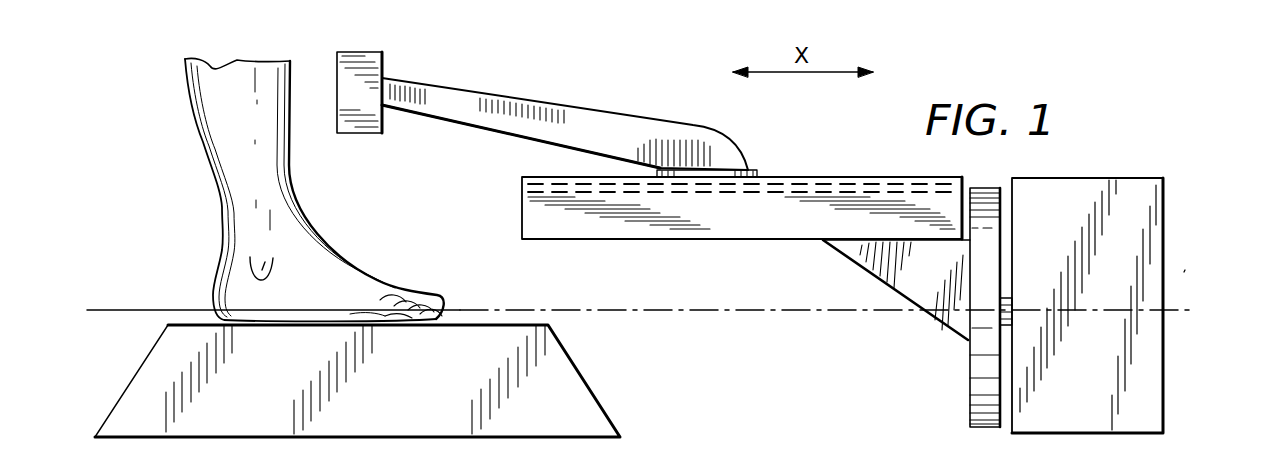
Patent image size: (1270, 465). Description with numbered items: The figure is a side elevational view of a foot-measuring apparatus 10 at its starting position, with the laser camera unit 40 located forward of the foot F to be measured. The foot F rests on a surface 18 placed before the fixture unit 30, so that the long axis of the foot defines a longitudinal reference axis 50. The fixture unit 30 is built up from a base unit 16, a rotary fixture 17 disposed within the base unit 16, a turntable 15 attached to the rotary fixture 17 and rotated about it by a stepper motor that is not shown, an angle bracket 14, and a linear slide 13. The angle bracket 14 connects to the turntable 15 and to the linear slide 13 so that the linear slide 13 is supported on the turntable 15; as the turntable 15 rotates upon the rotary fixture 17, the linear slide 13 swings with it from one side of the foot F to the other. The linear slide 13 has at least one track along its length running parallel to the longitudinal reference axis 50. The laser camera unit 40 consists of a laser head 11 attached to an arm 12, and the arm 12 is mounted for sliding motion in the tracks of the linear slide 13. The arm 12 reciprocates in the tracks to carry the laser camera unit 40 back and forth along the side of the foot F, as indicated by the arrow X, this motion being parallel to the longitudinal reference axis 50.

The apparatus 10 is at (1106, 277).
The laser head 11 is at (377, 47).
The arm 12 is at (725, 155).
The linear slide 13 is at (873, 177).
The angle bracket 14 is at (938, 300).
The turntable 15 is at (985, 380).
The base unit 16 is at (1137, 400).
The rotary fixture 17 is at (1013, 298).
The surface 18 is at (575, 395).
The fixture unit 30 is at (1185, 270).
The laser camera unit 40 is at (614, 100).
The longitudinal reference axis 50 is at (123, 314).
The foot F is at (233, 209).